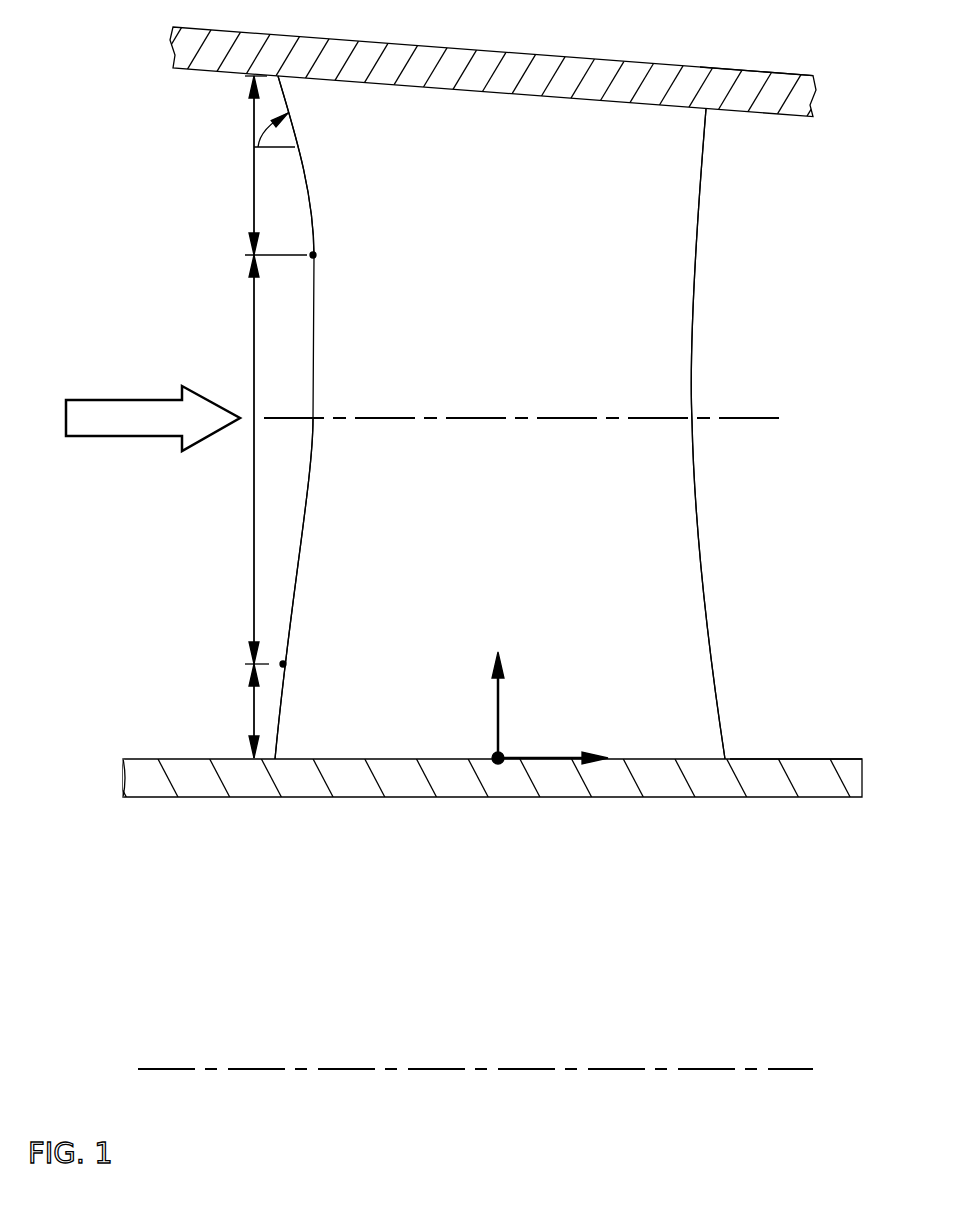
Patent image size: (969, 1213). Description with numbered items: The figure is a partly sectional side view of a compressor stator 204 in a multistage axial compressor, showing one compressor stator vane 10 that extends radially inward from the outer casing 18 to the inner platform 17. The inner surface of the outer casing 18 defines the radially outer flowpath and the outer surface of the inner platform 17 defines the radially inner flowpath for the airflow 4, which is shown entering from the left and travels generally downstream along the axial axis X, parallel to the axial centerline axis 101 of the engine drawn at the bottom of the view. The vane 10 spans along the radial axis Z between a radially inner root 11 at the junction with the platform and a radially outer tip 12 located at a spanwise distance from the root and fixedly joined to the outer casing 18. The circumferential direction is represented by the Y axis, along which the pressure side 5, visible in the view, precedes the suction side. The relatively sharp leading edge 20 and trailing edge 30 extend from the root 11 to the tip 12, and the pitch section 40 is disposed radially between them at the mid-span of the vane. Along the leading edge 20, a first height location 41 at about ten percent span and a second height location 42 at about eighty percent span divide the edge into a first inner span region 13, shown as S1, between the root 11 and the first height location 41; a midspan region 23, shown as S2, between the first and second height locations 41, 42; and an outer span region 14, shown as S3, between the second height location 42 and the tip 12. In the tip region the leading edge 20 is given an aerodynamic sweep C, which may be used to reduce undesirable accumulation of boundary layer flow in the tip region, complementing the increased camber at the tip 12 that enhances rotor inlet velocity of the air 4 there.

The airflow 4 is at (124, 397).
The pressure side 5 is at (503, 516).
The compressor stator vane 10 is at (288, 607).
The airfoil root 11 is at (682, 758).
The airfoil tip 12 is at (577, 98).
The first inner span region 13 is at (252, 717).
The outer span region 14 is at (253, 197).
The inner platform 17 is at (757, 760).
The outer casing 18 is at (785, 73).
The leading edge 20 is at (312, 227).
The midspan region 23 is at (252, 523).
The trailing edge 30 is at (692, 362).
The pitch section 40 is at (527, 418).
The first height location 41 is at (285, 664).
The second height location 42 is at (315, 255).
The axial centerline axis 101 is at (263, 1068).
The compressor stator 204 is at (757, 494).
The first inner span region extent S1 is at (252, 698).
The midspan region extent S2 is at (250, 491).
The outer span region extent S3 is at (252, 174).
The aerodynamic sweep C is at (262, 135).
The axial axis X is at (575, 757).
The circumferential axis Y is at (495, 755).
The radial axis Z is at (497, 695).